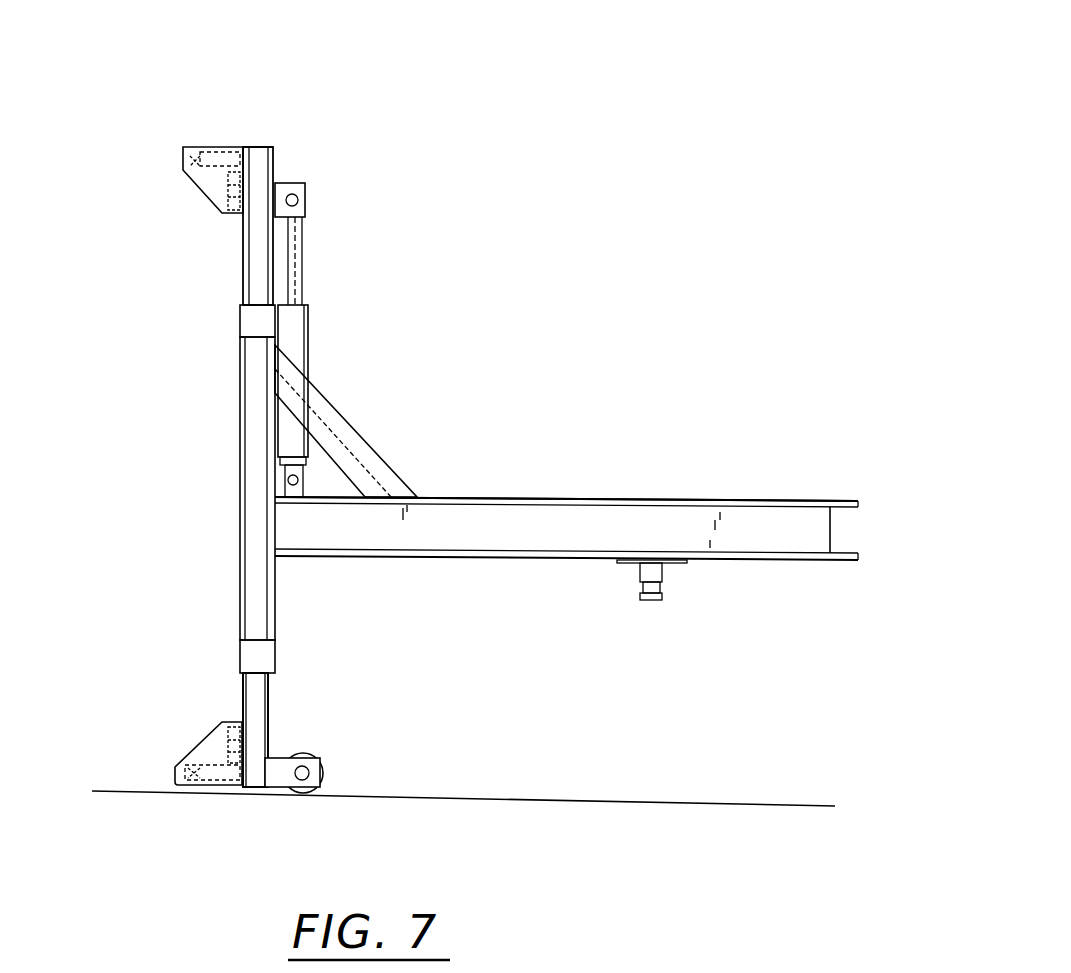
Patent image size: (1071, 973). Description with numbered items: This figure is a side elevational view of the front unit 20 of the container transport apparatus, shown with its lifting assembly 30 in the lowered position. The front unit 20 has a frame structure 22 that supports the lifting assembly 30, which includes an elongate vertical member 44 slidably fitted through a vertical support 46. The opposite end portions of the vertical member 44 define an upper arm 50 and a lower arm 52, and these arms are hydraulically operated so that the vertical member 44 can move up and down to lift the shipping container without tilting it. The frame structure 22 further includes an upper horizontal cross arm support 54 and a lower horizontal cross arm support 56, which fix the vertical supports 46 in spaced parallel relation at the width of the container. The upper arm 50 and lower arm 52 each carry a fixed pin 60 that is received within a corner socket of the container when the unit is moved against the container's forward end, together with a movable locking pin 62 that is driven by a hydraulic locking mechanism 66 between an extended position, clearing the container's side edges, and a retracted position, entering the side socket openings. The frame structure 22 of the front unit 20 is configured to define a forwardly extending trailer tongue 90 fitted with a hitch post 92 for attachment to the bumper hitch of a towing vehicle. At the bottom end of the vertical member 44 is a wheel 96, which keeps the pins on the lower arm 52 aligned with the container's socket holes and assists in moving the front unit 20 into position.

The front unit 20 is at (414, 464).
The frame structure 22 is at (608, 497).
The lifting assembly 30 is at (318, 277).
The elongate vertical member 44 is at (245, 232).
The vertical support 46 is at (243, 557).
The upper arm 50 is at (275, 172).
The lower arm 52 is at (257, 707).
The upper horizontal cross arm support 54 is at (248, 325).
The lower horizontal cross arm support 56 is at (243, 652).
The fixed pin 60 is at (228, 162).
The movable locking pin 62 is at (192, 163).
The hydraulic locking mechanism 66 is at (233, 190).
The trailer tongue 90 is at (672, 500).
The hitch post 92 is at (663, 600).
The wheel 96 is at (300, 753).